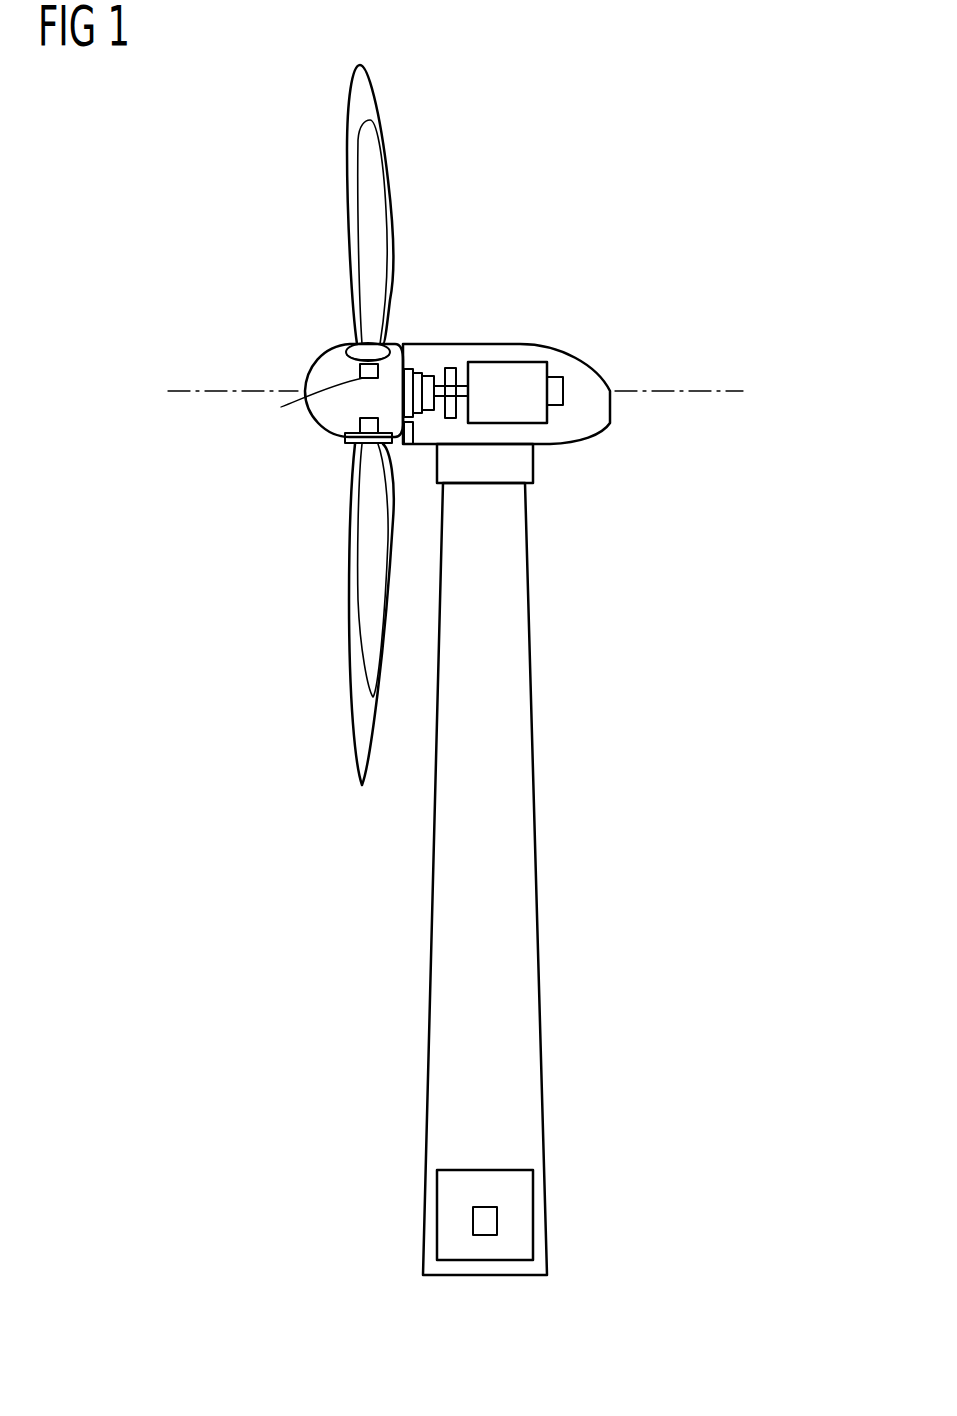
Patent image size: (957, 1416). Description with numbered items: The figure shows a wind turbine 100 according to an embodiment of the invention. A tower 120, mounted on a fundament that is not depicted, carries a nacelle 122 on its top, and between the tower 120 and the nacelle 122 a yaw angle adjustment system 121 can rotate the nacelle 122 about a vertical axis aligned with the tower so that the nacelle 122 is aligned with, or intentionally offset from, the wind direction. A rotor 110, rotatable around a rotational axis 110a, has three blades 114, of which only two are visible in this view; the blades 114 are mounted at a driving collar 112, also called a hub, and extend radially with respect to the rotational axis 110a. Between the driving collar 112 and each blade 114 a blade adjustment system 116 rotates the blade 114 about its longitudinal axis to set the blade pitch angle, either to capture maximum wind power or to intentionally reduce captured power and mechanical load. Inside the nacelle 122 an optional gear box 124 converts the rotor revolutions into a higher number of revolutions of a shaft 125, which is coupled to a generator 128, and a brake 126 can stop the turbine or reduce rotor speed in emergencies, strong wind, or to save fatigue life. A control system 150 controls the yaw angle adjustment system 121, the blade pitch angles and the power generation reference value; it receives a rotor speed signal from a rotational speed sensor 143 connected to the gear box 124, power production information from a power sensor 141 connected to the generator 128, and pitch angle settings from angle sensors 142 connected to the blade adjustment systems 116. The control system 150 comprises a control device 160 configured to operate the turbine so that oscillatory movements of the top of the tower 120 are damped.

The wind turbine 100 is at (669, 188).
The rotor 110 is at (246, 310).
The rotational axis 110a is at (177, 391).
The driving collar 112 is at (312, 372).
The blade 114 is at (348, 168).
The blade adjustment system 116 is at (348, 345).
The tower 120 is at (529, 578).
The yaw angle adjustment system 121 is at (533, 468).
The nacelle 122 is at (582, 358).
The gear box 124 is at (417, 375).
The shaft 125 is at (445, 397).
The brake 126 is at (455, 370).
The generator 128 is at (508, 362).
The power sensor 141 is at (563, 393).
The angle sensor 142 is at (363, 408).
The rotational speed sensor 143 is at (405, 446).
The control system 150 is at (483, 1170).
The control device 160 is at (497, 1222).